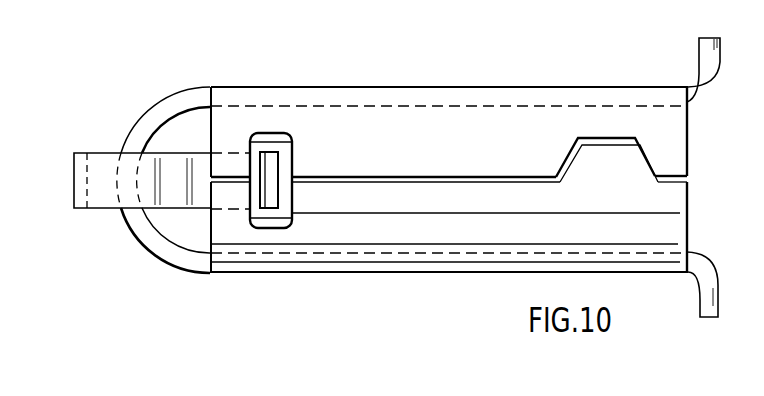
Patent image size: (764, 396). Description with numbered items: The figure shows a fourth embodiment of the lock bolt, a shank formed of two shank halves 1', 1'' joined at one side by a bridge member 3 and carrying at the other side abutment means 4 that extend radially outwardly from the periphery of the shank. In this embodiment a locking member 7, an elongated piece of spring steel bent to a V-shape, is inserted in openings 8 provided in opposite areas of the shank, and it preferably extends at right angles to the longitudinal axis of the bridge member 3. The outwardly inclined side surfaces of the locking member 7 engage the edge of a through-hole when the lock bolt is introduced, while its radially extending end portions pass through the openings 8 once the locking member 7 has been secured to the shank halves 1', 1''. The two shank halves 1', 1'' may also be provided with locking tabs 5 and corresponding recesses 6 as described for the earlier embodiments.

The shank half 1' is at (449, 112).
The shank half 1'' is at (449, 244).
The bridge member 3 is at (152, 240).
The abutment means 4 is at (712, 70).
The locking tabs 5 is at (627, 168).
The recesses 6 is at (623, 136).
The locking member 7 is at (101, 198).
The openings 8 is at (270, 133).